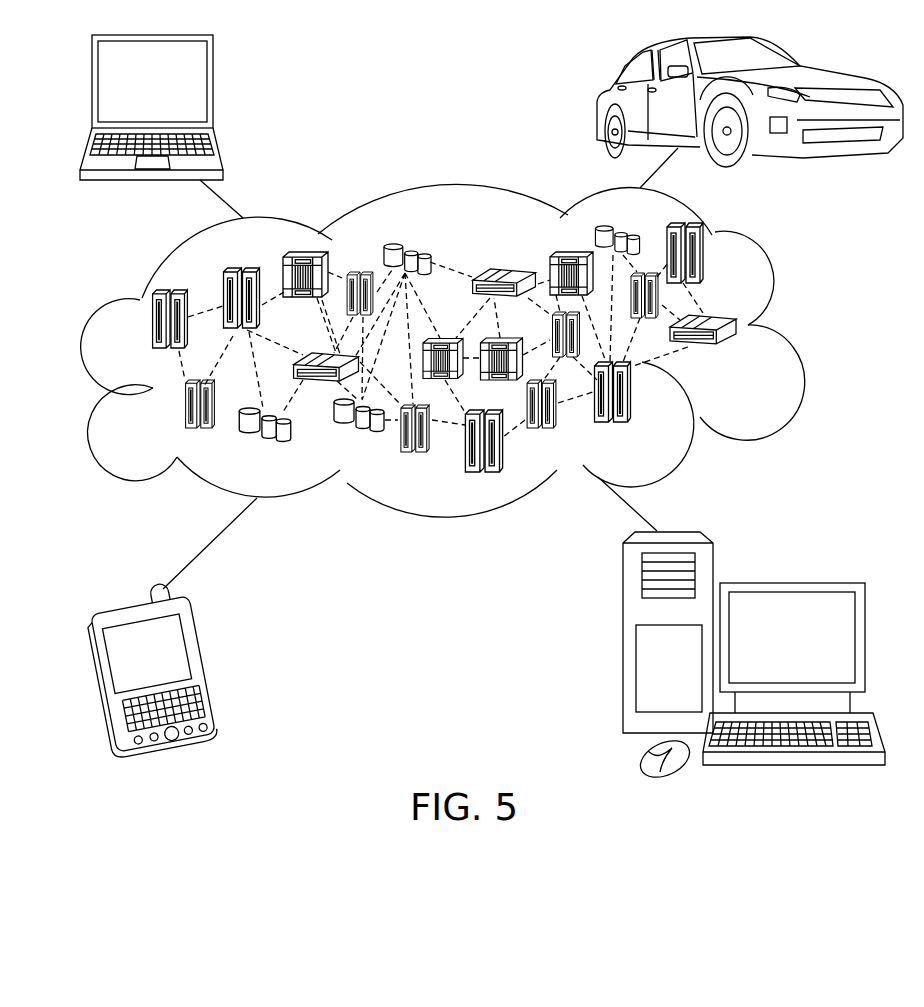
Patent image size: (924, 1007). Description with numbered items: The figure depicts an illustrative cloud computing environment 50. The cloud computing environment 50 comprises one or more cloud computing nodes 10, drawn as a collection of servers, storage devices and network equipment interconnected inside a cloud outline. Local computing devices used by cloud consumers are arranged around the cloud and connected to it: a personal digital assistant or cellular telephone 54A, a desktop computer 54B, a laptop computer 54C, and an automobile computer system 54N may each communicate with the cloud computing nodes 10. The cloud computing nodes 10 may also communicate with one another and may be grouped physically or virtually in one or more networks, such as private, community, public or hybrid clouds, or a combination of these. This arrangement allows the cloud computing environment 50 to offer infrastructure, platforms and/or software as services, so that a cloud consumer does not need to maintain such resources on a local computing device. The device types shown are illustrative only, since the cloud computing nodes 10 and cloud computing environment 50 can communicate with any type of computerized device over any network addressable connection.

The cloud computing node 10 is at (740, 356).
The cloud computing environment 50 is at (789, 328).
The personal digital assistant or cellular telephone 54A is at (203, 665).
The desktop computer 54B is at (790, 583).
The laptop computer 54C is at (213, 88).
The automobile computer system 54N is at (600, 101).